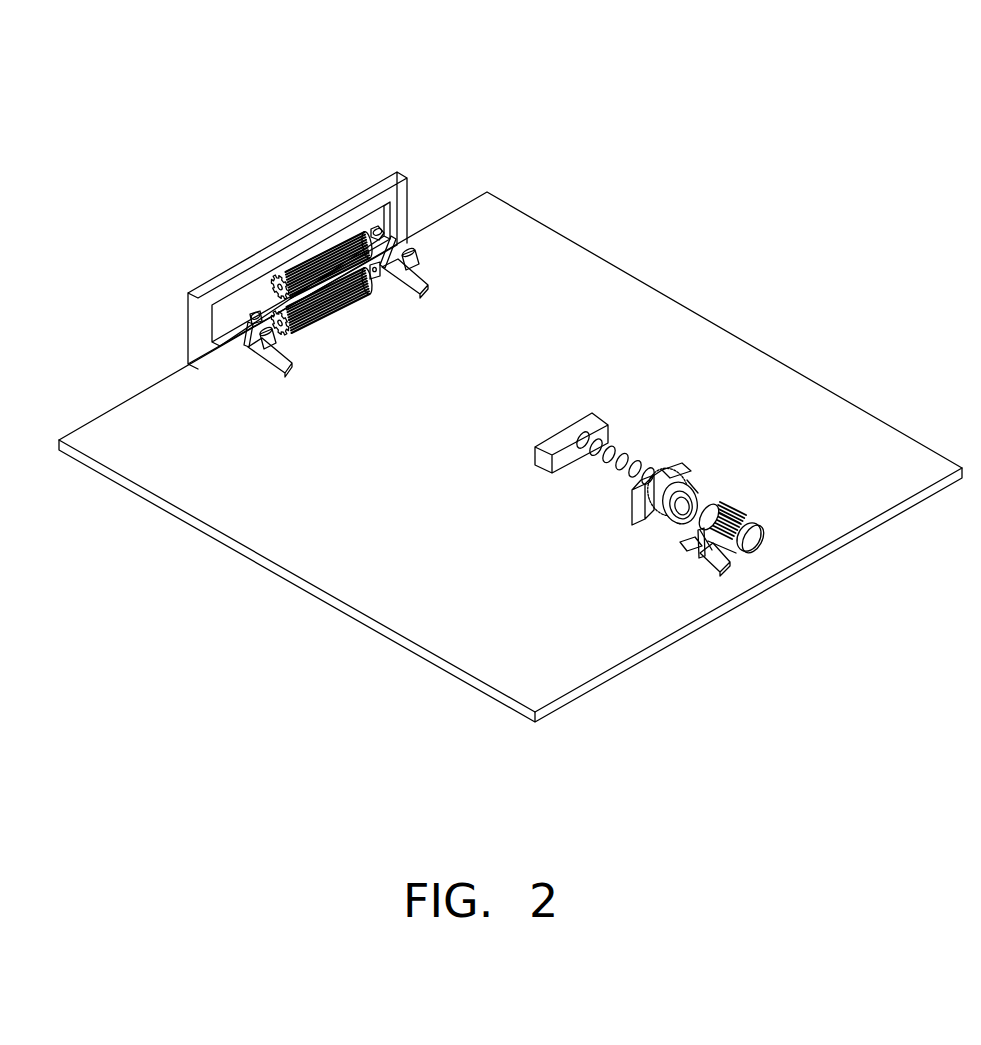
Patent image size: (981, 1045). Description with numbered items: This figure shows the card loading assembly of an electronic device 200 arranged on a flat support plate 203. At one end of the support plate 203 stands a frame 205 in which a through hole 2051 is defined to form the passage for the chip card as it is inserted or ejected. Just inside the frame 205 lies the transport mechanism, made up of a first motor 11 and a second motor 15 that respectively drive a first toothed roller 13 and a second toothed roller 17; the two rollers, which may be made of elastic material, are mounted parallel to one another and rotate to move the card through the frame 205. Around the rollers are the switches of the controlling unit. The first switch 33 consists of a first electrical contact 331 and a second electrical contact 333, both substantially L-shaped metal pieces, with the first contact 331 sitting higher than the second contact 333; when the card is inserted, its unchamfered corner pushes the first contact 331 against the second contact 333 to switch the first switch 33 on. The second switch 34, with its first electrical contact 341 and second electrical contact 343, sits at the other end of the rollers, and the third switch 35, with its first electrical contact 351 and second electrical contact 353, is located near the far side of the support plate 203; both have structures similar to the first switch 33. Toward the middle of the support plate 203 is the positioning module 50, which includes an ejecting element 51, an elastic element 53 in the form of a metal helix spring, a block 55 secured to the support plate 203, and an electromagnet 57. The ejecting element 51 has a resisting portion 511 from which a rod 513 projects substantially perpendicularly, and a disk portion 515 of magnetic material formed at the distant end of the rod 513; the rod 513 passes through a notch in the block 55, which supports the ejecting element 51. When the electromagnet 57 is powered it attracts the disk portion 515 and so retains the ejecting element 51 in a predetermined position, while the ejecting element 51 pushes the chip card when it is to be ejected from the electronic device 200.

The electronic device 200 is at (258, 61).
The support plate 203 is at (507, 236).
The frame 205 is at (239, 270).
The through hole 2051 is at (222, 317).
The first motor 11 is at (375, 225).
The first toothed roller 13 is at (292, 222).
The second motor 15 is at (367, 240).
The second toothed roller 17 is at (292, 261).
The first switch 33 is at (183, 490).
The first electrical contact 331 is at (247, 351).
The second electrical contact 333 is at (283, 374).
The second switch 34 is at (462, 189).
The first electrical contact 341 is at (395, 234).
The second electrical contact 343 is at (417, 261).
The third switch 35 is at (733, 641).
The first electrical contact 351 is at (683, 550).
The second electrical contact 353 is at (722, 563).
The positioning module 50 is at (656, 515).
The ejecting element 51 is at (507, 608).
The resisting portion 511 is at (541, 470).
The rod 513 is at (613, 477).
The disk portion 515 is at (655, 515).
The elastic element 53 is at (611, 462).
The block 55 is at (680, 477).
The electromagnet 57 is at (742, 513).